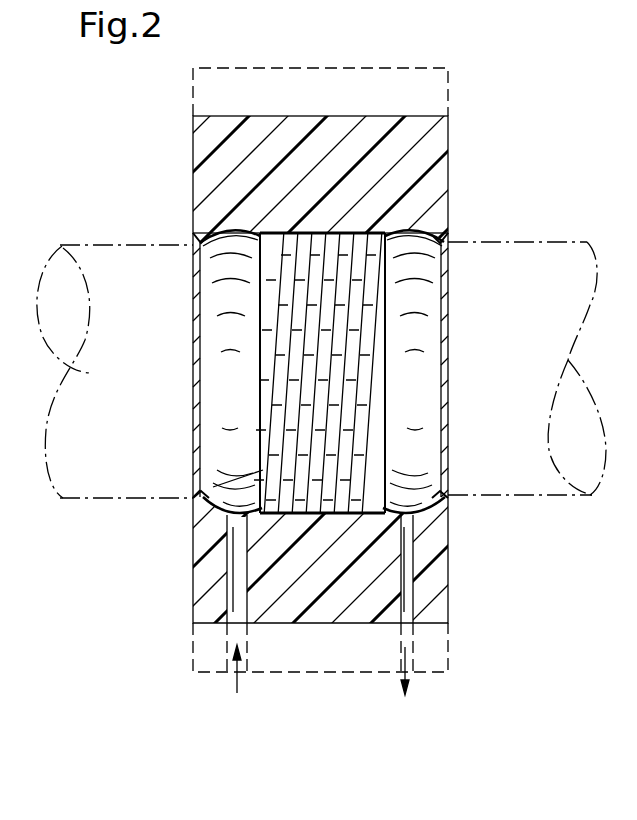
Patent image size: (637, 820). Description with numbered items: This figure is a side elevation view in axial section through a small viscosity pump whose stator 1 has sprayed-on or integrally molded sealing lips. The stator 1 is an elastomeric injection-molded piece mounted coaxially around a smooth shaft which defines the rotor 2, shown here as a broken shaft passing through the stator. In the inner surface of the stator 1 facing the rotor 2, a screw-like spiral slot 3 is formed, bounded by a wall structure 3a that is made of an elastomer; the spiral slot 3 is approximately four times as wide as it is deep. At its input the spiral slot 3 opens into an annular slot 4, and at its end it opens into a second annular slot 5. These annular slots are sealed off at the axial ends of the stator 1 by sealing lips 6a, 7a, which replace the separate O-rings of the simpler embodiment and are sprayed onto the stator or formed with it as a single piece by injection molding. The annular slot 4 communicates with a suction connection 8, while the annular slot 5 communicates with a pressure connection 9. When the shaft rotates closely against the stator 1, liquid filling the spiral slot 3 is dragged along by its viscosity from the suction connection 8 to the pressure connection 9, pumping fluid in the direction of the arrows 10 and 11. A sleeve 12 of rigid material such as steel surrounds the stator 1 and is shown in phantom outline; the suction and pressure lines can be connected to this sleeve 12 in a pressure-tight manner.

The stator 1 is at (427, 607).
The rotor 2 is at (90, 373).
The spiral slot 3 is at (210, 503).
The wall structure 3a is at (275, 462).
The annular slot 4 is at (218, 233).
The annular slot 5 is at (449, 236).
The sealing lip 6a is at (199, 238).
The sealing lip 7a is at (443, 503).
The suction connection 8 is at (238, 558).
The pressure connection 9 is at (405, 588).
The arrow 10 is at (236, 687).
The arrow 11 is at (412, 672).
The sleeve 12 is at (430, 105).